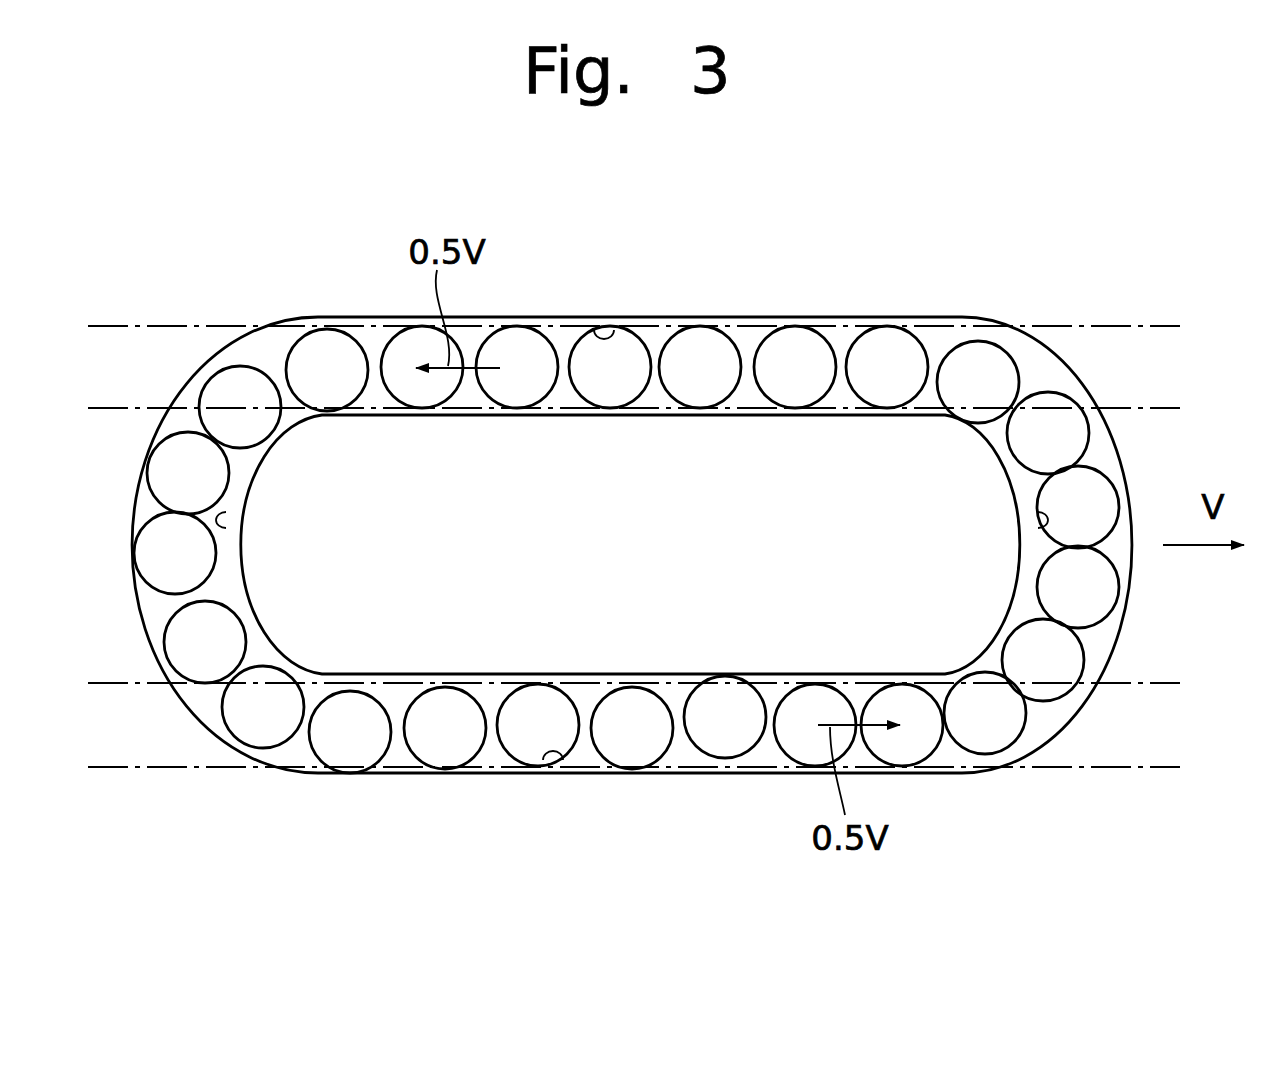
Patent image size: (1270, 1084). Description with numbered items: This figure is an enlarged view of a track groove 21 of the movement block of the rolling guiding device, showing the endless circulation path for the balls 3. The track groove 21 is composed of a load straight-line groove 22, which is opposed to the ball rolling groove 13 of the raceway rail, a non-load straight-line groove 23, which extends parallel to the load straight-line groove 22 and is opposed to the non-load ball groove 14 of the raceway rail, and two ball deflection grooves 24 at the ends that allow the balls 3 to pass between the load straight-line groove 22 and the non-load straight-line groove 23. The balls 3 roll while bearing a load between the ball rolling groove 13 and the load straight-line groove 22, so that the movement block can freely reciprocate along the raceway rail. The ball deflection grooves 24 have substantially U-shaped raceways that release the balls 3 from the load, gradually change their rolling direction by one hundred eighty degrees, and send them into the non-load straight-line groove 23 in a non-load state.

The ball 3 is at (515, 390).
The ball rolling groove 13 is at (1097, 330).
The non-load ball groove 14 is at (1093, 755).
The track groove 21 is at (921, 310).
The load straight-line groove 22 is at (605, 330).
The non-load straight-line groove 23 is at (553, 760).
The ball deflection groove 24 is at (232, 520).